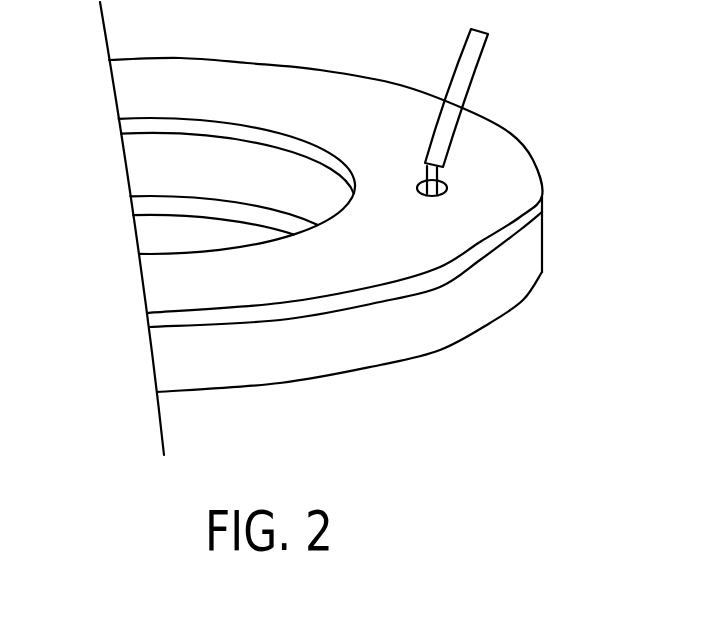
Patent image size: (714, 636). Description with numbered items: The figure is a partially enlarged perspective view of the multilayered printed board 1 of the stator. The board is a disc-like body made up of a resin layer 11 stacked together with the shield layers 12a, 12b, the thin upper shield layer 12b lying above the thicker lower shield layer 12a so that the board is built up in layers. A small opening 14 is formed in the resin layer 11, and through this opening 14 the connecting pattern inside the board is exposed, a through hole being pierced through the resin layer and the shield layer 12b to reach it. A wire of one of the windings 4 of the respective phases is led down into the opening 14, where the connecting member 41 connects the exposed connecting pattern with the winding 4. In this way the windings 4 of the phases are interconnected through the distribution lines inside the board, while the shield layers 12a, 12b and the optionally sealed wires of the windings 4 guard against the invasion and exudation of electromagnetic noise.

The multilayered printed board 1 is at (361, 228).
The resin layer 11 is at (488, 137).
The shield layer 12a is at (556, 266).
The shield layer 12b is at (555, 195).
The opening 14 is at (460, 182).
The winding 4 is at (449, 111).
The connecting member 41 is at (422, 183).